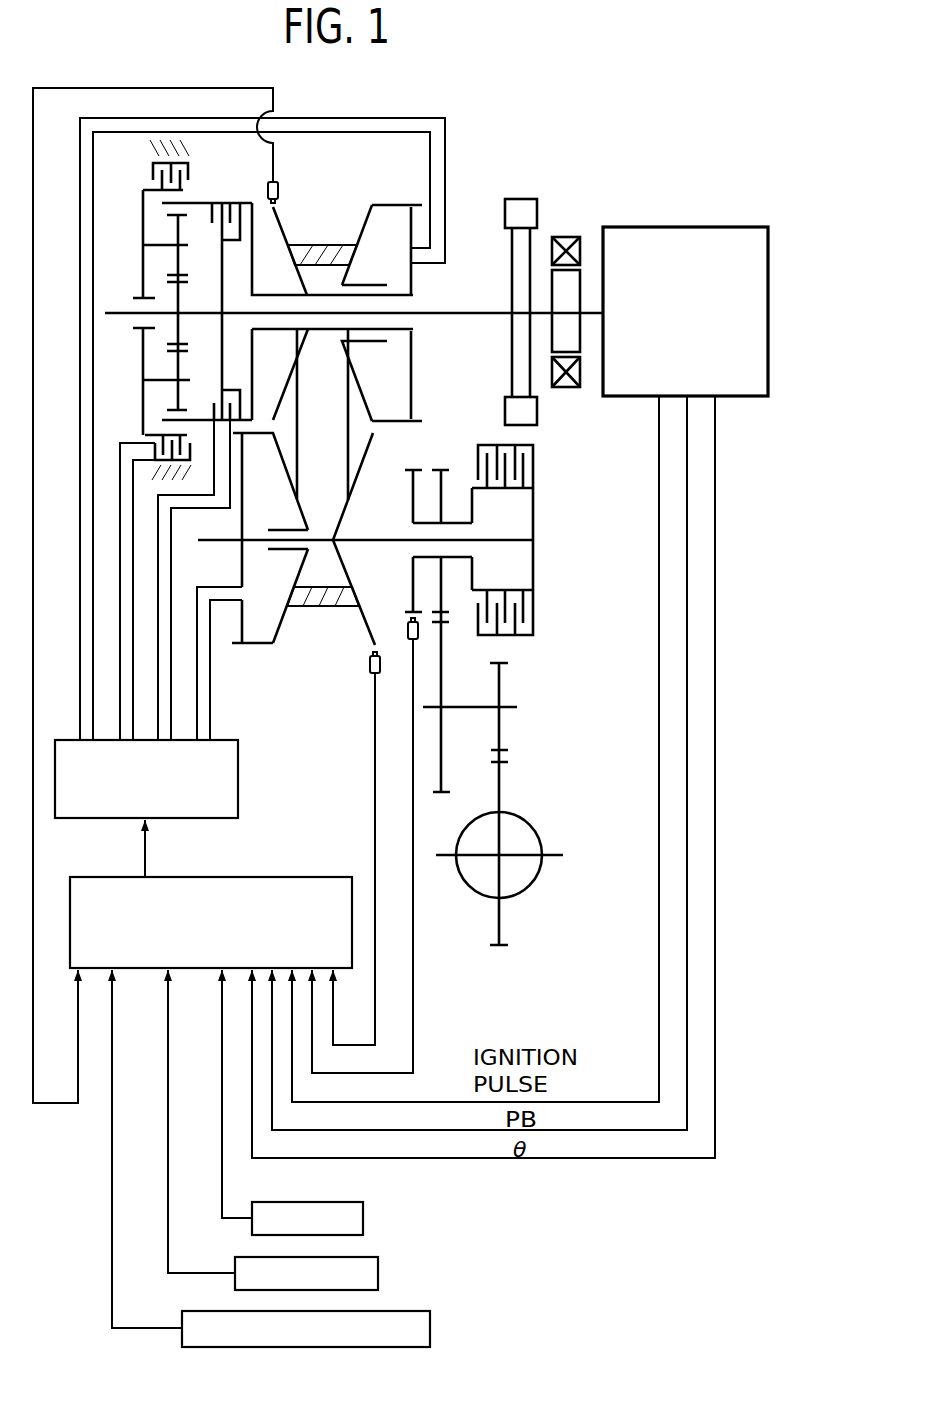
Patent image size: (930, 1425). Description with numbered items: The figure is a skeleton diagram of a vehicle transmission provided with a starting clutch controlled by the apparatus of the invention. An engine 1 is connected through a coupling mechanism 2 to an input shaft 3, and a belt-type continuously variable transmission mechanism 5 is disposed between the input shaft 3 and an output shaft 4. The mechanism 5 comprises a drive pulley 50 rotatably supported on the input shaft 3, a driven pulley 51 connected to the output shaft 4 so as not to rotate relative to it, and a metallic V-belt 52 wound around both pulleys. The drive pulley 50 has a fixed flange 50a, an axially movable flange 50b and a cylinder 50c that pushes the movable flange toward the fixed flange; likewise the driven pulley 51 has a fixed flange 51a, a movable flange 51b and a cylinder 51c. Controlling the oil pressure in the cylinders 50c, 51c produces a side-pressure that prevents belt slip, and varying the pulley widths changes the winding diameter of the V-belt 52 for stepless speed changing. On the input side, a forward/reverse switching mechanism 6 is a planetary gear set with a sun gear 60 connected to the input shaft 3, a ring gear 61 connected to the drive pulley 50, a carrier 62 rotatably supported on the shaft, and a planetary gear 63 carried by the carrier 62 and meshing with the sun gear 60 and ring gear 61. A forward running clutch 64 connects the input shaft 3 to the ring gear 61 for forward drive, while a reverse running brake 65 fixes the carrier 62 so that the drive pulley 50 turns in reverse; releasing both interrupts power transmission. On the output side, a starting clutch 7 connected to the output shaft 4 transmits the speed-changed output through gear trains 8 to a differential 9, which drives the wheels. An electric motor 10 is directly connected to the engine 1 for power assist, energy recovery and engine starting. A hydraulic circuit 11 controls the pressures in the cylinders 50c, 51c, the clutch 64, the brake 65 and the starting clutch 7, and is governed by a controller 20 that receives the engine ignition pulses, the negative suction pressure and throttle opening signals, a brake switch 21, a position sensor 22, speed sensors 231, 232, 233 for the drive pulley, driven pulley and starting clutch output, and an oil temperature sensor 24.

The engine 1 is at (673, 232).
The coupling mechanism 2 is at (520, 199).
The input shaft 3 is at (457, 315).
The output shaft 4 is at (387, 542).
The belt-type continuously variable transmission mechanism 5 is at (334, 179).
The forward/reverse switching mechanism 6 is at (146, 161).
The starting clutch 7 is at (542, 620).
The gear trains 8 is at (518, 680).
The differential 9 is at (470, 888).
The electric motor 10 is at (567, 388).
The hydraulic circuit 11 is at (238, 785).
The controller 20 is at (290, 880).
The brake switch 21 is at (363, 1218).
The position sensor 22 is at (378, 1272).
The oil temperature sensor 24 is at (430, 1328).
The speed sensor 231 is at (268, 188).
The speed sensor 232 is at (368, 665).
The speed sensor 233 is at (406, 628).
The drive pulley 50 is at (384, 202).
The fixed flange 50a is at (281, 216).
The movable flange 50b is at (366, 222).
The cylinder 50c is at (398, 263).
The driven pulley 51 is at (286, 652).
The fixed flange 51a is at (362, 619).
The movable flange 51b is at (284, 627).
The cylinder 51c is at (282, 510).
The metallic V-belt 52 is at (353, 421).
The sun gear 60 is at (186, 336).
The ring gear 61 is at (197, 203).
The carrier 62 is at (142, 253).
The planetary gear 63 is at (186, 254).
The forward running clutch 64 is at (230, 203).
The reverse running brake 65 is at (152, 177).